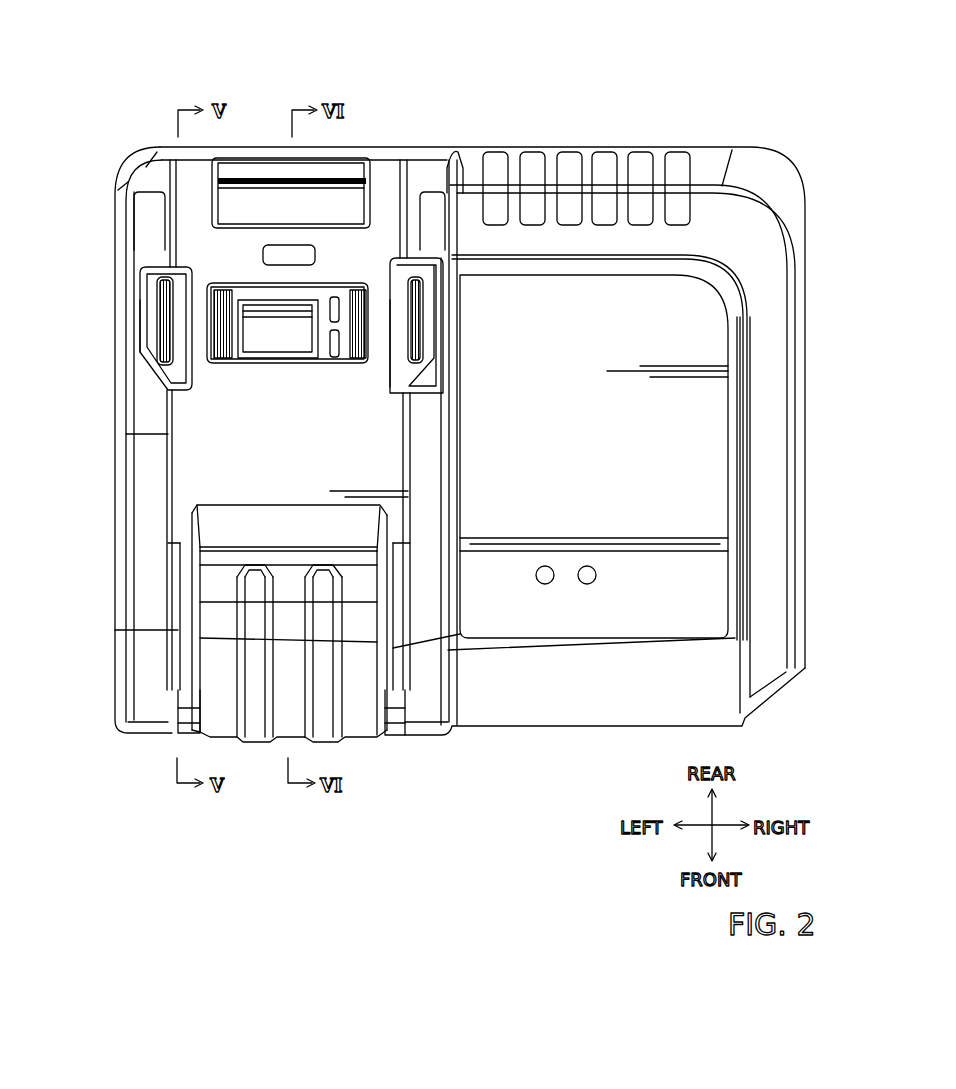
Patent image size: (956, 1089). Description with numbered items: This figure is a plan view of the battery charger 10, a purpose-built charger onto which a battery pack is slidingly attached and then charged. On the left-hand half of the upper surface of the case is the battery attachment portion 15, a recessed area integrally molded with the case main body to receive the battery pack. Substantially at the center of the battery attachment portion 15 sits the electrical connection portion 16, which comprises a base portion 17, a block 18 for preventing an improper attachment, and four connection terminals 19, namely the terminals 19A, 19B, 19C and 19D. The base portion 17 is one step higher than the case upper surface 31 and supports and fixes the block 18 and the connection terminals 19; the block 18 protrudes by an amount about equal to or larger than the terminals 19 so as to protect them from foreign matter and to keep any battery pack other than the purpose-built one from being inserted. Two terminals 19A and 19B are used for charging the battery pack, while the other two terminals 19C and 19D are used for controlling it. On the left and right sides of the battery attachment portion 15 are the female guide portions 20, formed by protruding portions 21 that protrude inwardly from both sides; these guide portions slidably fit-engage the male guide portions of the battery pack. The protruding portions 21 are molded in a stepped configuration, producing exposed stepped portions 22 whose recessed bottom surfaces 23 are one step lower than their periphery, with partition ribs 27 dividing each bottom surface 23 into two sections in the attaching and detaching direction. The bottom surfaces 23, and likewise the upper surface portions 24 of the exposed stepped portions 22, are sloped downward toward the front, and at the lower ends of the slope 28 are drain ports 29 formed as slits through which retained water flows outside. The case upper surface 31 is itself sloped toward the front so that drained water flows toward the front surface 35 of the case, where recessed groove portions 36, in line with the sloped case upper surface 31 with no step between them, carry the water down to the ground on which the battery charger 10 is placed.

The battery charger 10 is at (700, 90).
The battery attachment portion 15 is at (358, 272).
The electrical connection portion 16 is at (382, 272).
The base portion 17 is at (242, 366).
The block for preventing improper attachment 18 is at (255, 347).
The connection terminals 19 is at (387, 272).
The connection terminal 19A is at (228, 317).
The connection terminal 19B is at (370, 326).
The connection terminal 19C is at (337, 323).
The connection terminal 19D is at (327, 352).
The female guide portions 20 is at (302, 168).
The protruding portions 21 is at (176, 158).
The exposed stepped portions 22 is at (294, 324).
The bottom surfaces 23 is at (148, 288).
The upper surface portions 24 is at (138, 318).
The partition ribs 27 is at (160, 263).
The slope 28 is at (298, 541).
The drain ports 29 is at (168, 398).
The case upper surface 31 is at (250, 480).
The front surface 35 is at (269, 756).
The recessed groove portions 36 is at (183, 728).